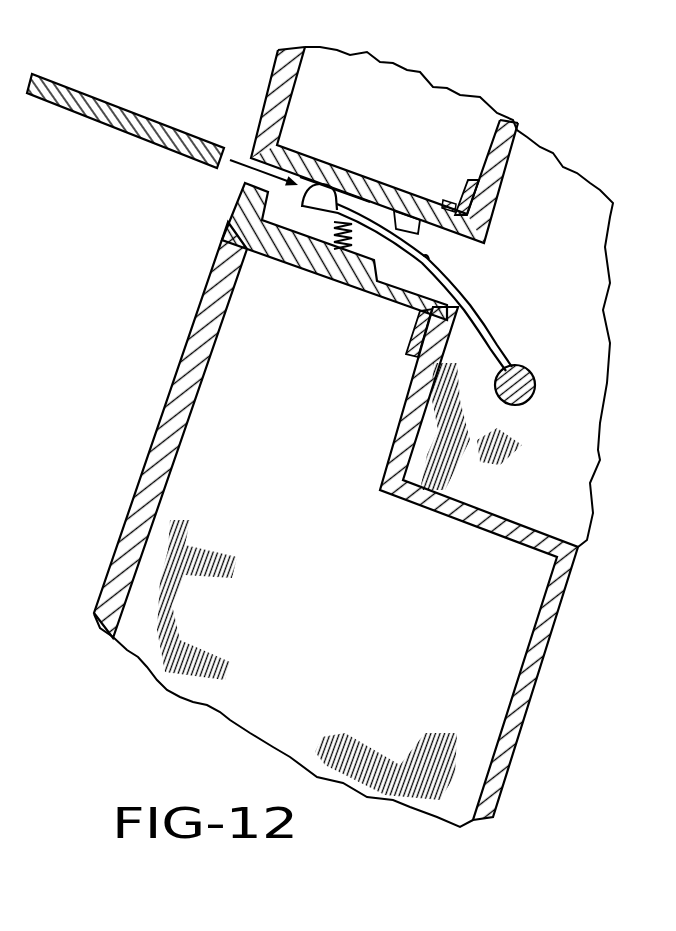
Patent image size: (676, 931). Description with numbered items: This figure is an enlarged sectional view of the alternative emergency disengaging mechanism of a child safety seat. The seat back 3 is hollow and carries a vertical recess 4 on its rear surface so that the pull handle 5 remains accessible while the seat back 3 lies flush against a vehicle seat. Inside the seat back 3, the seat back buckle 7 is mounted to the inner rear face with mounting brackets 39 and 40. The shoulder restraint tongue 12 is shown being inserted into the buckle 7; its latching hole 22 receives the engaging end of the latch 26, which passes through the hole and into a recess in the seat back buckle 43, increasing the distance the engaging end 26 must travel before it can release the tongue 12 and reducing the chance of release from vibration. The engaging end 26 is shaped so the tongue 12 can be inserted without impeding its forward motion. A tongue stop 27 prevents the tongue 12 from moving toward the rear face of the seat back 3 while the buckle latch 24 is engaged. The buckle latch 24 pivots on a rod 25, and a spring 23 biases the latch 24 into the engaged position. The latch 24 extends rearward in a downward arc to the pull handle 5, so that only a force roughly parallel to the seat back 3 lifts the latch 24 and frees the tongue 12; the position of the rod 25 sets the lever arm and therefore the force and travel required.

The seat back 3 is at (157, 472).
The vertical recess 4 is at (568, 232).
The pull handle 5 is at (530, 368).
The seat back buckle 7 is at (227, 213).
The shoulder restraint tongue 12 is at (90, 97).
The latching hole 22 is at (157, 133).
The spring 23 is at (340, 240).
The buckle latch 24 is at (485, 307).
The rod 25 is at (428, 259).
The engaging end of the latch 26 is at (326, 192).
The tongue stop 27 is at (400, 226).
The mounting bracket 39 is at (465, 188).
The mounting bracket 40 is at (420, 352).
The recess in the seat back buckle 43 is at (346, 190).